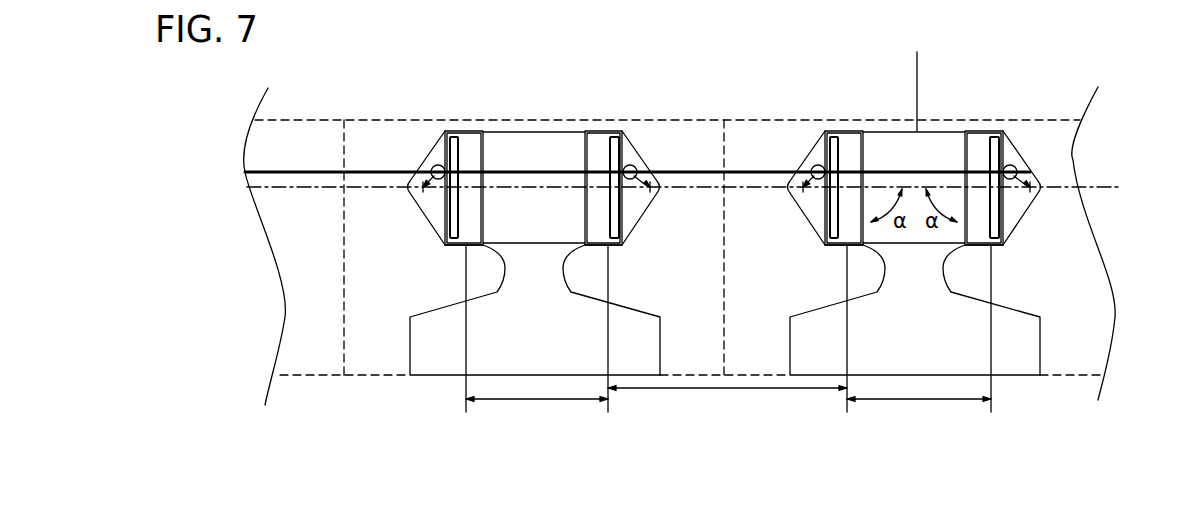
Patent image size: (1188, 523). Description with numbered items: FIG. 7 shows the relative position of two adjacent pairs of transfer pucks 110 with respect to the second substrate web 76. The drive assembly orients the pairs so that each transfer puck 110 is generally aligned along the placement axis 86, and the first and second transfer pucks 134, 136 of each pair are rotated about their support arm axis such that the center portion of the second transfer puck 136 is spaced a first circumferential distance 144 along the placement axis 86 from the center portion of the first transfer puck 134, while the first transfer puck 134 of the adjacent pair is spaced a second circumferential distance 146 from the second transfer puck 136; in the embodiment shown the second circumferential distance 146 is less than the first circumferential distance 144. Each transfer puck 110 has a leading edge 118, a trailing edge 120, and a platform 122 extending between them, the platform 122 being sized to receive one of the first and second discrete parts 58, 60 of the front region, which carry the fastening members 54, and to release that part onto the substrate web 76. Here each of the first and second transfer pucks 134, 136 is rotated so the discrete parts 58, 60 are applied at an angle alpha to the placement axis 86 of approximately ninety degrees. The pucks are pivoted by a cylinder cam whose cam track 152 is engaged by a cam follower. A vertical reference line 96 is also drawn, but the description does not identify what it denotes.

The fastening member 54 is at (987, 137).
The first discrete part 58 is at (592, 225).
The second discrete part 60 is at (472, 227).
The second substrate web 76 is at (1040, 120).
The placement axis 86 is at (1098, 187).
The vertical reference line 96 is at (918, 73).
The transfer puck 110 is at (426, 147).
The leading edge 118 is at (615, 246).
The trailing edge 120 is at (455, 246).
The platform 122 is at (423, 191).
The first transfer puck 134 is at (643, 147).
The second transfer puck 136 is at (465, 130).
The first circumferential distance 144 is at (525, 402).
The second circumferential distance 146 is at (708, 395).
The cam track 152 is at (327, 172).